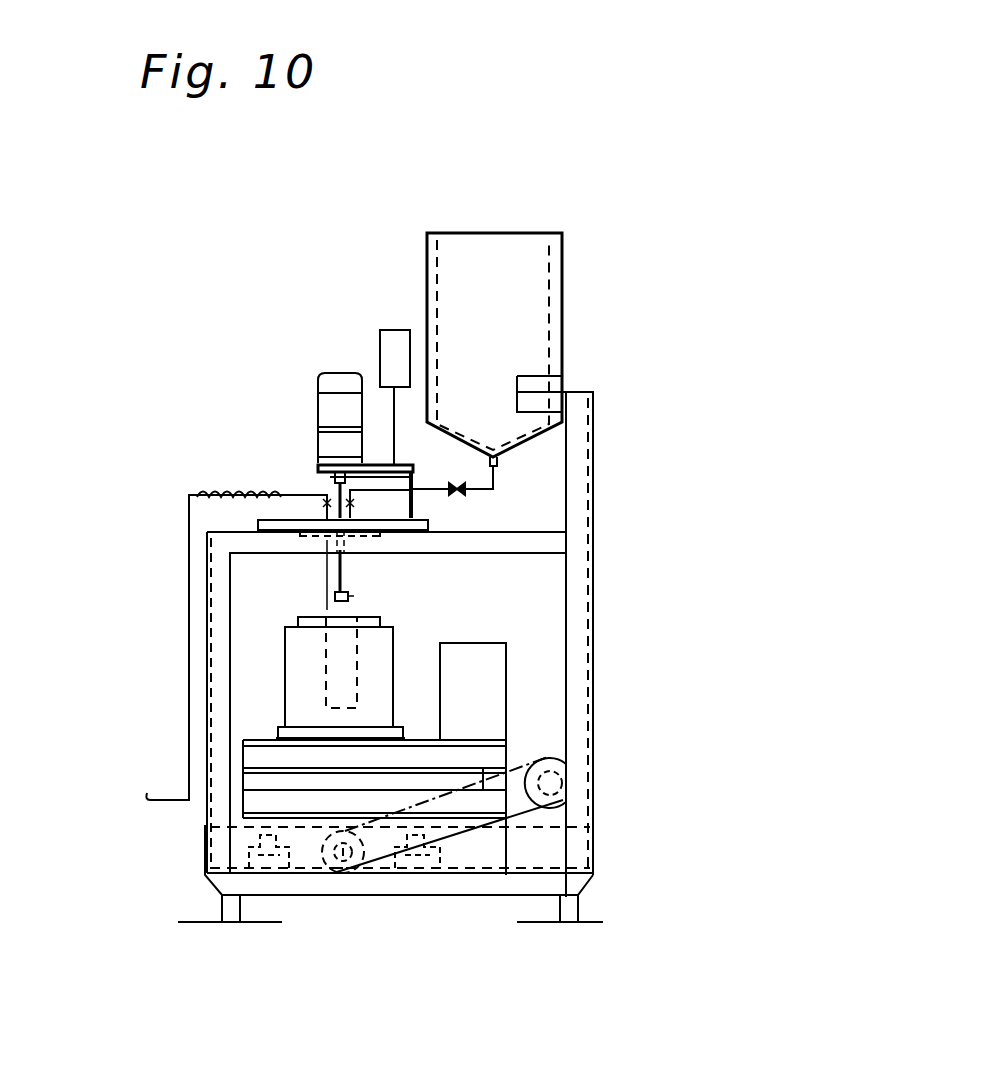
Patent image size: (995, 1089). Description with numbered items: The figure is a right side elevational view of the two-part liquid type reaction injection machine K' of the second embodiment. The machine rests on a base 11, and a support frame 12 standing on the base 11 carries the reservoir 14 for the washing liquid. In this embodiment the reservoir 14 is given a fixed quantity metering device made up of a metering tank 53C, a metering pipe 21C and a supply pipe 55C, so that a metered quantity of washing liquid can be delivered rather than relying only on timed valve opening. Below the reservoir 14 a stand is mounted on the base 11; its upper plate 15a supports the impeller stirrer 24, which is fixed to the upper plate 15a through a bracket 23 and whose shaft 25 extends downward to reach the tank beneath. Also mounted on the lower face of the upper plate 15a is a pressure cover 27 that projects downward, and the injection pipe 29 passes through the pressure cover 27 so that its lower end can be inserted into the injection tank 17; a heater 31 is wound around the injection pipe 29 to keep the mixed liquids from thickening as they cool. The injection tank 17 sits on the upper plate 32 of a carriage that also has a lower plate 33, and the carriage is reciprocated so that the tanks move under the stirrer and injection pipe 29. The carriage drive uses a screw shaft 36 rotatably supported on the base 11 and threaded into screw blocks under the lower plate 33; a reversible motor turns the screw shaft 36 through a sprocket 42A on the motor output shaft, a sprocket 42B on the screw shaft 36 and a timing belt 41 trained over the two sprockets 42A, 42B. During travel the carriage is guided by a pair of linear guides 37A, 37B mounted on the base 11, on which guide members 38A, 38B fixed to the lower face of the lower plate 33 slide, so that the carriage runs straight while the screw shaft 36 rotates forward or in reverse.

The reservoir 14 is at (533, 298).
The metering tank 53C is at (391, 330).
The impeller stirrer 24 is at (341, 380).
The heater 31 is at (222, 493).
The injection pipe 29 is at (293, 493).
The bracket 23 is at (418, 471).
The metering pipe 21C is at (497, 470).
The support frame 12 is at (578, 486).
The supply pipe 55C is at (353, 512).
The upper plate 15a is at (258, 524).
The pressure cover 27 is at (302, 540).
The shaft 25 is at (348, 573).
The injection tank 17 is at (297, 665).
The upper plate 32 is at (250, 757).
The lower plate 33 is at (250, 800).
The timing belt 41 is at (502, 770).
The sprocket 42A is at (560, 785).
The sprocket 42B is at (315, 875).
The base 11 is at (588, 847).
The guide member 38A is at (205, 866).
The guide member 38B is at (468, 872).
The linear guide 37A is at (267, 878).
The linear guide 37B is at (420, 880).
The screw shaft 36 is at (347, 873).
The two-part liquid type reaction injection machine K' is at (776, 645).